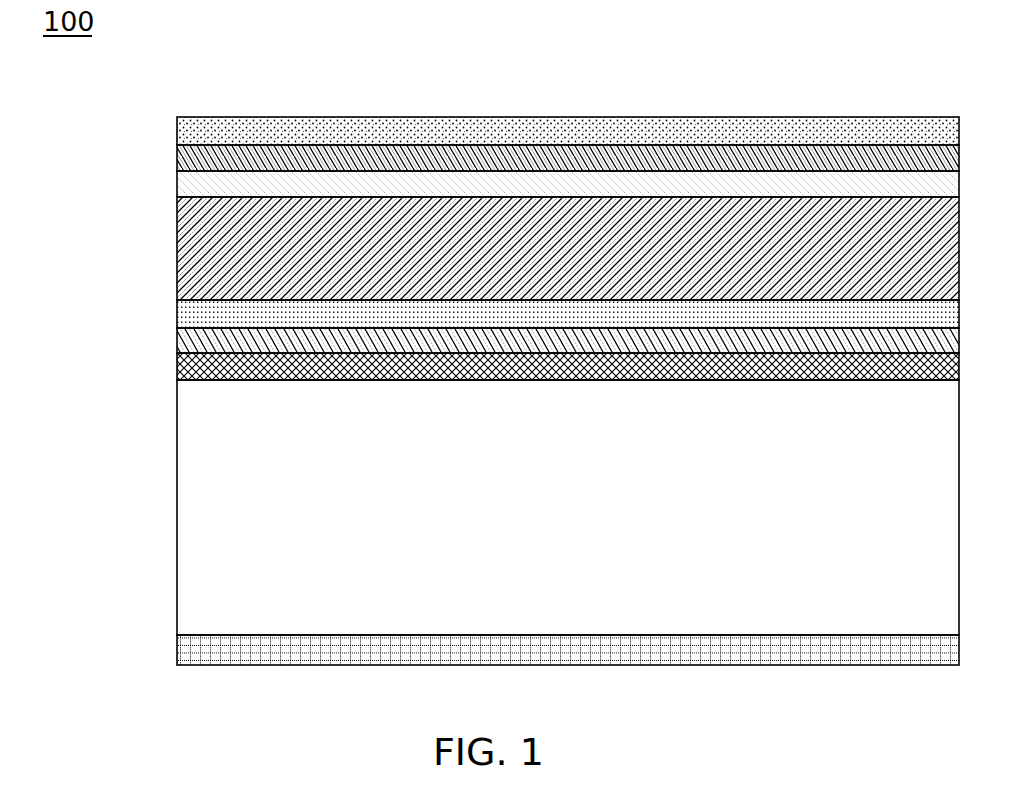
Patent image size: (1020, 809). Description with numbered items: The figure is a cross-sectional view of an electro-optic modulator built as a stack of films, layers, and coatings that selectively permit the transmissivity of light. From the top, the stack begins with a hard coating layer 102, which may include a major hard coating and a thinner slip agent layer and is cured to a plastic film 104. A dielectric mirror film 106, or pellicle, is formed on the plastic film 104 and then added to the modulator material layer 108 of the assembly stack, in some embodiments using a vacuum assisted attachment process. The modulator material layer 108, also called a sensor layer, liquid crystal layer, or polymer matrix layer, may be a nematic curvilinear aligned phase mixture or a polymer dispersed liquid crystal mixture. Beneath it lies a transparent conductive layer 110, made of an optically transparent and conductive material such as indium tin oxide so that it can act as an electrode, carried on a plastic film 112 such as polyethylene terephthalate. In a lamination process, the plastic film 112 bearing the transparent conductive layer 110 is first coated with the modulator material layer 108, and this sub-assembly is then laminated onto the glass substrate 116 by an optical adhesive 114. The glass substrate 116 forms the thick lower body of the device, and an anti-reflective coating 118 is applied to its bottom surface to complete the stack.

The hard coating layer 102 is at (177, 131).
The plastic film 104 is at (177, 158).
The dielectric mirror film 106 is at (177, 184).
The modulator material layer 108 is at (177, 248).
The transparent conductive layer 110 is at (177, 314).
The plastic film 112 is at (177, 340).
The optical adhesive 114 is at (177, 366).
The glass substrate 116 is at (177, 506).
The anti-reflective coating 118 is at (177, 649).